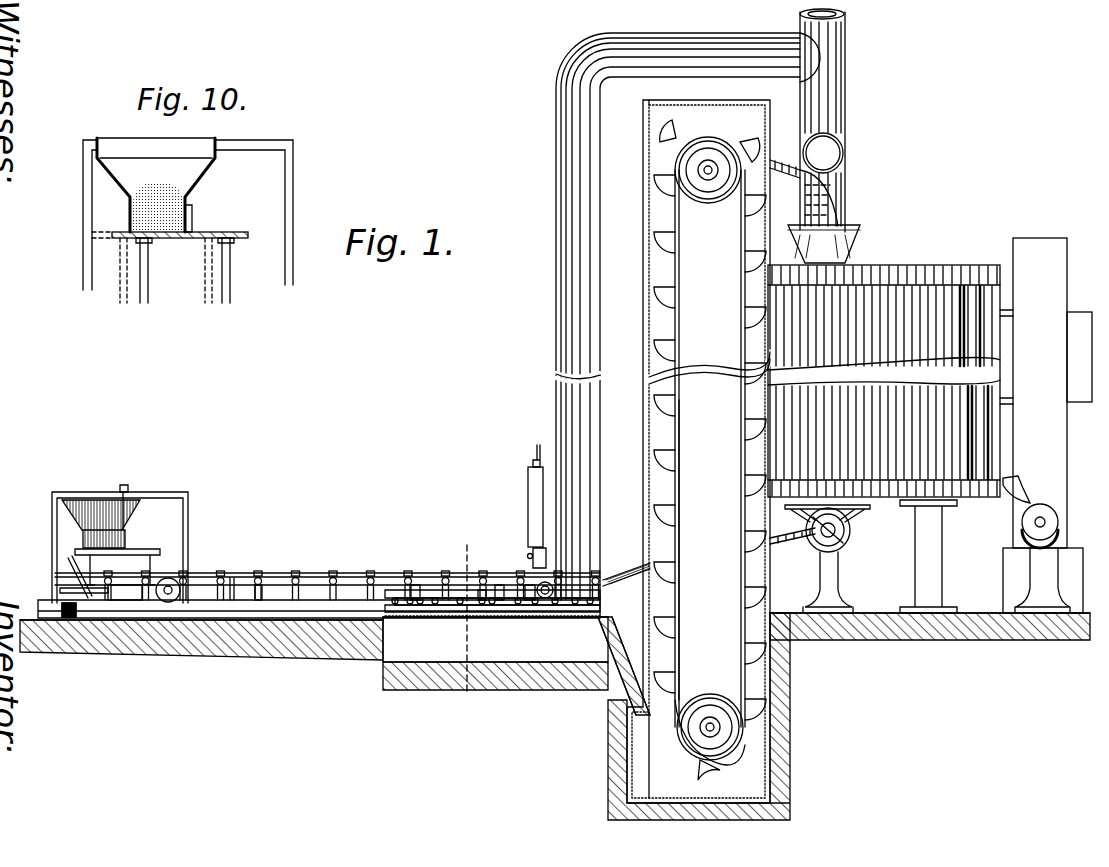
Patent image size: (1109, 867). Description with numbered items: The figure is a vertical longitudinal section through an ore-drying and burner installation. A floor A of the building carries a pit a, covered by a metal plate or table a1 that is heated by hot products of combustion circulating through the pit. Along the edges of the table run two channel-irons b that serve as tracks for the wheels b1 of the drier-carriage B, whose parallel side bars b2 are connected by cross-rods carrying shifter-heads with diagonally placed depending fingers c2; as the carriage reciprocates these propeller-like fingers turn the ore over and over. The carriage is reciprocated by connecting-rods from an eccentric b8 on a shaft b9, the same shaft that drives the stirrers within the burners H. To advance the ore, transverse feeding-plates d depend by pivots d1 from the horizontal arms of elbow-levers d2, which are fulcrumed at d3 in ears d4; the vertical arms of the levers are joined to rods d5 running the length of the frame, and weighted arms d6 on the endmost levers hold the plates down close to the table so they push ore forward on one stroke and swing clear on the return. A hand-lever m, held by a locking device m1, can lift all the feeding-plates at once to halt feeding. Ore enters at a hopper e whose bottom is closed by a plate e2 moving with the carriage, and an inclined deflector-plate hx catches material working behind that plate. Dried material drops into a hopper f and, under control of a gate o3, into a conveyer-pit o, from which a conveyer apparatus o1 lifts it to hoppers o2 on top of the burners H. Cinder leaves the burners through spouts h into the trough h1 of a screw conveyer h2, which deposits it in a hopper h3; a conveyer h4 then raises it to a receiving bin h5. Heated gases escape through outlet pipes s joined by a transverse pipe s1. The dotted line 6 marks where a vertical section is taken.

In FIG. 10, the hopper e is at (196, 190).
In FIG. 1, the hopper e is at (62, 515).
In FIG. 10, the plate e2 is at (236, 234).
In FIG. 1, the plate e2 is at (140, 549).
In FIG. 1, the inclined deflector-plate hx is at (66, 575).
In FIG. 1, the weighted arms d6 is at (98, 588).
In FIG. 1, the wheels b1 is at (168, 578).
In FIG. 1, the channel-irons b is at (192, 608).
In FIG. 1, the rods d5 is at (235, 578).
In FIG. 1, the elbow-levers d2 is at (258, 596).
In FIG. 1, the drier-carriage B is at (357, 582).
In FIG. 1, the pivots d1 is at (385, 586).
In FIG. 1, the ears d4 is at (438, 598).
In FIG. 1, the section line 6 6 is at (467, 619).
In FIG. 1, the fulcrum d3 is at (483, 590).
In FIG. 1, the hand-lever m is at (540, 493).
In FIG. 1, the locking device m1 is at (538, 566).
In FIG. 1, the side bars b2 is at (405, 612).
In FIG. 1, the depending fingers c2 is at (470, 616).
In FIG. 1, the feeding-plates d is at (500, 614).
In FIG. 1, the table a1 is at (535, 614).
In FIG. 1, the pit a is at (495, 639).
In FIG. 1, the hopper f is at (630, 665).
In FIG. 1, the gate o3 is at (650, 634).
In FIG. 1, the conveyer apparatus o1 is at (680, 540).
In FIG. 1, the conveyer-pit o is at (752, 742).
In FIG. 1, the floor A is at (555, 716).
In FIG. 1, the burners H is at (915, 268).
In FIG. 1, the hoppers o2 is at (850, 245).
In FIG. 1, the outlet pipes s is at (843, 118).
In FIG. 1, the transverse pipe s1 is at (845, 157).
In FIG. 1, the conveyer h4 is at (1020, 262).
In FIG. 1, the receiving bin h5 is at (1082, 398).
In FIG. 1, the spouts h is at (1022, 480).
In FIG. 1, the screw conveyer h2 is at (1050, 510).
In FIG. 1, the trough h1 is at (1022, 532).
In FIG. 1, the hopper h3 is at (1012, 568).
In FIG. 1, the eccentric b8 is at (852, 535).
In FIG. 1, the shaft b9 is at (820, 540).